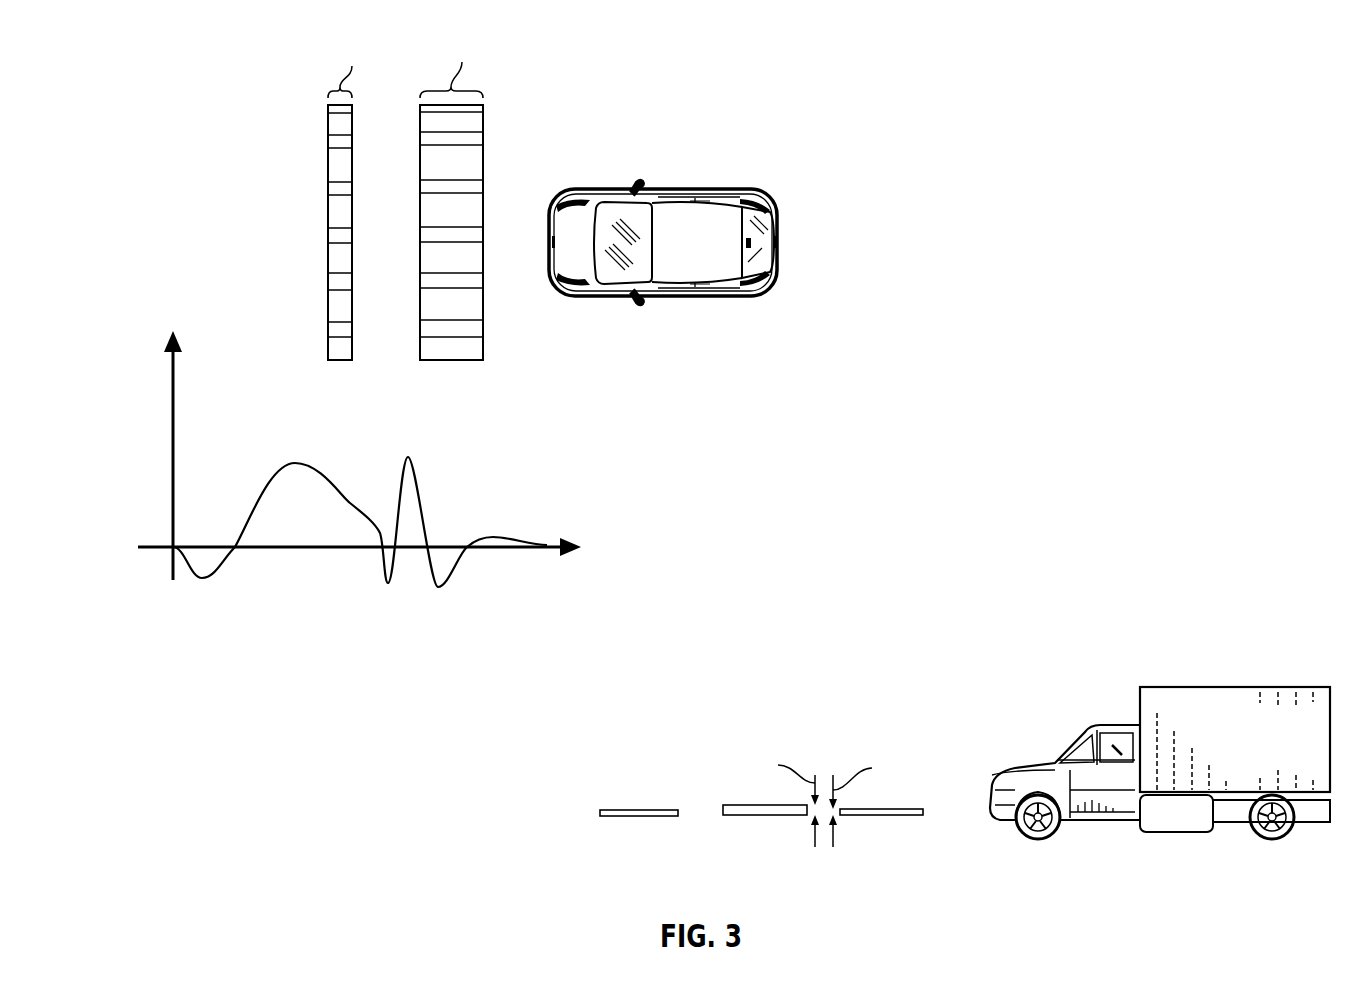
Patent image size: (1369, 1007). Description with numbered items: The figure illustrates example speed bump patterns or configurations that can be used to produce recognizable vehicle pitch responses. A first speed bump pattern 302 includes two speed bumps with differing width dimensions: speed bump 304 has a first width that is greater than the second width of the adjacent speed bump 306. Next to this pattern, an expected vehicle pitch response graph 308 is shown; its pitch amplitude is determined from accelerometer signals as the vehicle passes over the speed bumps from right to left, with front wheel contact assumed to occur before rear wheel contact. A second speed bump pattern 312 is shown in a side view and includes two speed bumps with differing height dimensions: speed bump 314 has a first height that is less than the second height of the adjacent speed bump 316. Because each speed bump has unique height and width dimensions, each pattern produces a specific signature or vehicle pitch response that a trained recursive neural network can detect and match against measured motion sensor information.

The speed bump pattern 302 is at (228, 63).
The speed bump 304 is at (485, 160).
The speed bump 306 is at (327, 213).
The expected vehicle pitch response graph 308 is at (412, 438).
The speed bump pattern 312 is at (634, 700).
The speed bump 314 is at (908, 817).
The speed bump 316 is at (735, 817).